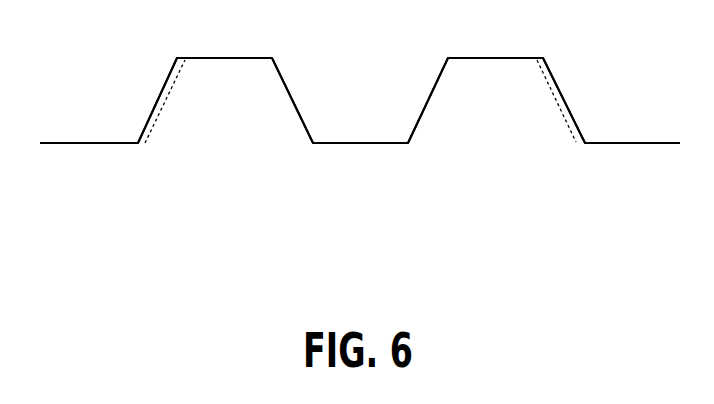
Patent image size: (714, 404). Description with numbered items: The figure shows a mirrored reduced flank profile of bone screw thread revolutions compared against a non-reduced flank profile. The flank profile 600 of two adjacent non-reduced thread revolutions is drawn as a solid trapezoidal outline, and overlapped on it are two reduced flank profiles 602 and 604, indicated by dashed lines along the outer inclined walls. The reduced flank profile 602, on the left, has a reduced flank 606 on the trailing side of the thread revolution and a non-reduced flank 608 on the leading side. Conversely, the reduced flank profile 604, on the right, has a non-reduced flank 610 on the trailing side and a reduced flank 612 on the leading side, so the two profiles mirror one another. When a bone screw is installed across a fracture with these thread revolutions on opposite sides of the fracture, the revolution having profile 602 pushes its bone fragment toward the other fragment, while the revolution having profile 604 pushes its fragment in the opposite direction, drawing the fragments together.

The flank profile 600 is at (360, 94).
The reduced flank profile 602 is at (190, 137).
The reduced flank profile 604 is at (532, 138).
The reduced flank 606 is at (197, 101).
The non-reduced flank 608 is at (332, 100).
The non-reduced flank 610 is at (395, 100).
The reduced flank 612 is at (524, 102).